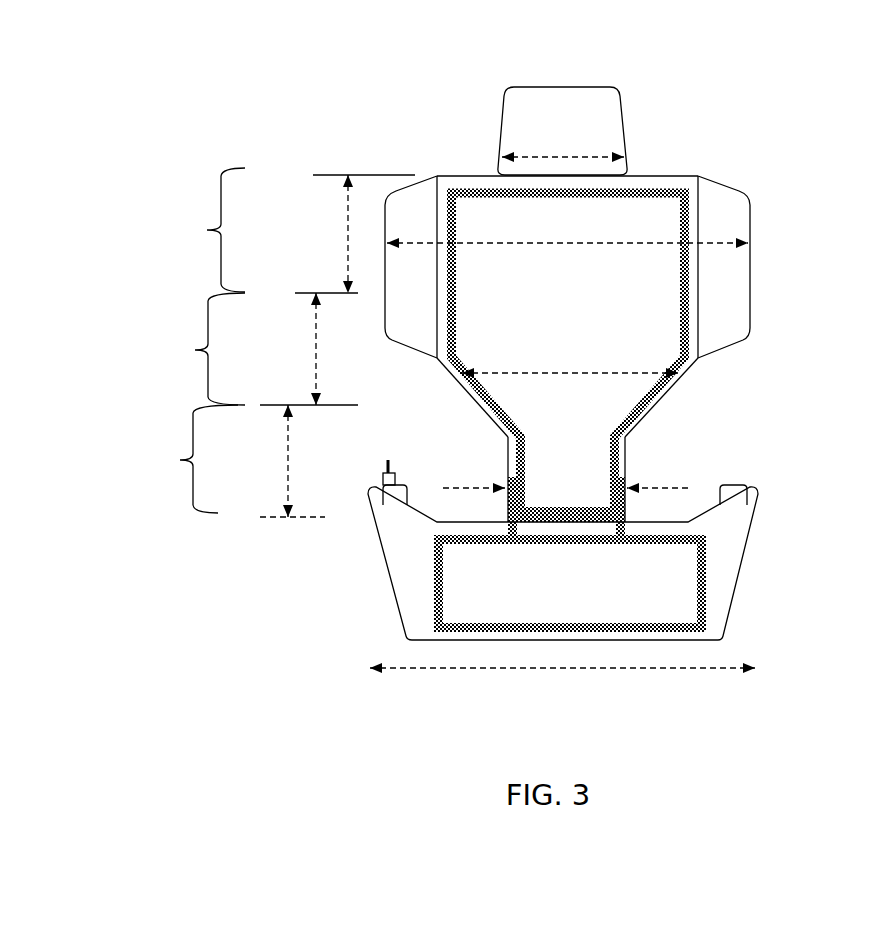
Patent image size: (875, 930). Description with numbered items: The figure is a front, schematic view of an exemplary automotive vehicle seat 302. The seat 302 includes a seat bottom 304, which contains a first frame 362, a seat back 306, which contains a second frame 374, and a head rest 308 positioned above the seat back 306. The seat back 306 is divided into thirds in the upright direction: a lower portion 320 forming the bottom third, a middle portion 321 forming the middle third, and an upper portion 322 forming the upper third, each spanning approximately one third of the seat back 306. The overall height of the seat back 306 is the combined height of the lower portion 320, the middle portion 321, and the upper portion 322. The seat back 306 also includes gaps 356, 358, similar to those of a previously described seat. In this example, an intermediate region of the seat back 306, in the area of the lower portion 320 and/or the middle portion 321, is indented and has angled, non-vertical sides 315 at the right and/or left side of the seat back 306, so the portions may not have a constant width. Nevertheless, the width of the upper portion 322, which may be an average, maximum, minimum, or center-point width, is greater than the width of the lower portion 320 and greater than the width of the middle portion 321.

The seat 302 is at (145, 60).
The seat bottom 304 is at (572, 553).
The seat back 306 is at (493, 351).
The head rest 308 is at (627, 153).
The angled, non-vertical sides 315 is at (472, 402).
The lower portion 320 is at (180, 460).
The middle portion 321 is at (195, 350).
The upper portion 322 is at (207, 230).
The gap 356 is at (488, 433).
The gap 358 is at (650, 447).
The first frame 362 is at (433, 596).
The second frame 374 is at (692, 297).